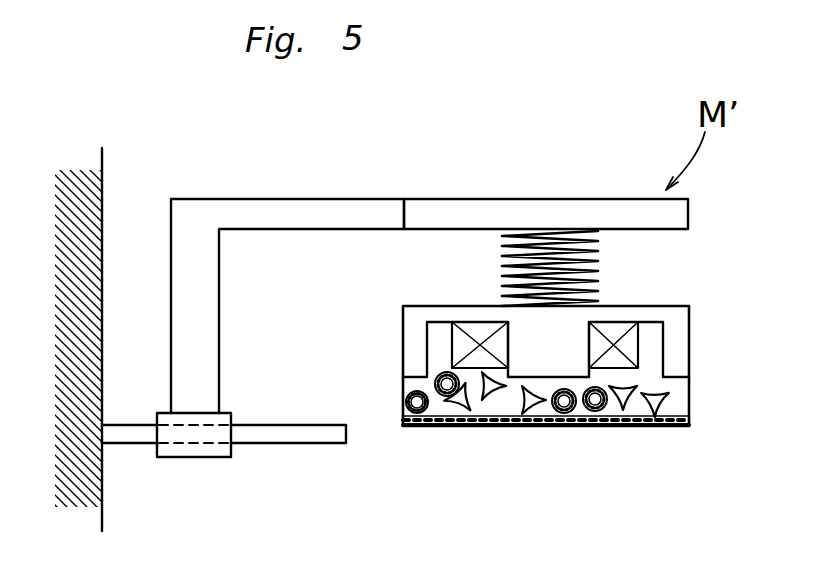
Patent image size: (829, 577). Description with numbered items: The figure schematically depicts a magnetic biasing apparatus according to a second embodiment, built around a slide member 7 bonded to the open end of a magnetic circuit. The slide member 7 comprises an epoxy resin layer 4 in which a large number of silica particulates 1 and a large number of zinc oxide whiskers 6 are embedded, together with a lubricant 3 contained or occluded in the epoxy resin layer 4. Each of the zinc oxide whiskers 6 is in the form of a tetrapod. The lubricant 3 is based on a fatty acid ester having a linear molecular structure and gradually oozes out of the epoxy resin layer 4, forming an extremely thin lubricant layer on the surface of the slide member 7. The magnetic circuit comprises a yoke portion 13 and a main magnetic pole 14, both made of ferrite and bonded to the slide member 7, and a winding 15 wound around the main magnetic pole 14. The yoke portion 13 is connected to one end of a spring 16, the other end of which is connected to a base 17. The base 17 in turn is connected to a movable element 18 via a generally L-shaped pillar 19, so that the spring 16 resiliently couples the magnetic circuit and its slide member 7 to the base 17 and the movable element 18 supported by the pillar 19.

The silica particulates 1 is at (552, 406).
The lubricant 3 is at (577, 428).
The epoxy resin layer 4 is at (556, 431).
The zinc oxide whiskers 6 is at (443, 418).
The slide member 7 is at (540, 464).
The yoke portion 13 is at (680, 312).
The main magnetic pole 14 is at (550, 373).
The winding 15 is at (455, 333).
The spring 16 is at (505, 270).
The base 17 is at (562, 207).
The movable element 18 is at (167, 413).
The pillar 19 is at (282, 199).